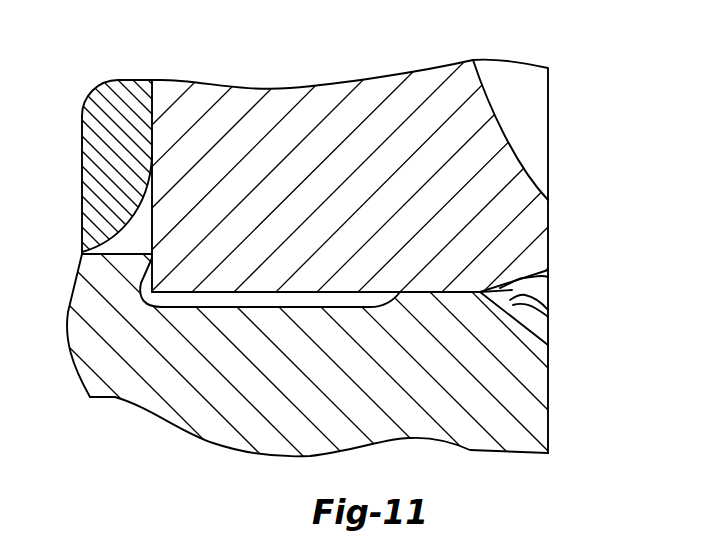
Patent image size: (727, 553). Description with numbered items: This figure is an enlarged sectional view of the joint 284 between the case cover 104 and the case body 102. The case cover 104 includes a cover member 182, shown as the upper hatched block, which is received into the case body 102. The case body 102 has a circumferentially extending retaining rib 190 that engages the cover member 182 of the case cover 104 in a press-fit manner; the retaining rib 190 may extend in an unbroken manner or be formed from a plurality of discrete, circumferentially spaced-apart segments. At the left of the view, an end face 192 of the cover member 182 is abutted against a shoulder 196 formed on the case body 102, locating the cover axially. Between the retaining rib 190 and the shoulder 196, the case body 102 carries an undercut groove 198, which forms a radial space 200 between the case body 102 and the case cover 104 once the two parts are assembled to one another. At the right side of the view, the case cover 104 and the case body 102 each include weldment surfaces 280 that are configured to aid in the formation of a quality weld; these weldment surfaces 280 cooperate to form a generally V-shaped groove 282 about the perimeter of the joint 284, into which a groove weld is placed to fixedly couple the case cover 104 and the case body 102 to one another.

The case body 102 is at (468, 443).
The case cover 104 is at (278, 102).
The cover member 182 is at (350, 110).
The retaining rib 190 is at (452, 293).
The end face 192 is at (150, 226).
The shoulder 196 is at (140, 260).
The undercut groove 198 is at (300, 307).
The radial space 200 is at (248, 299).
The weldment surfaces 280 is at (548, 277).
The V-shaped groove 282 is at (493, 290).
The joint 284 is at (580, 299).